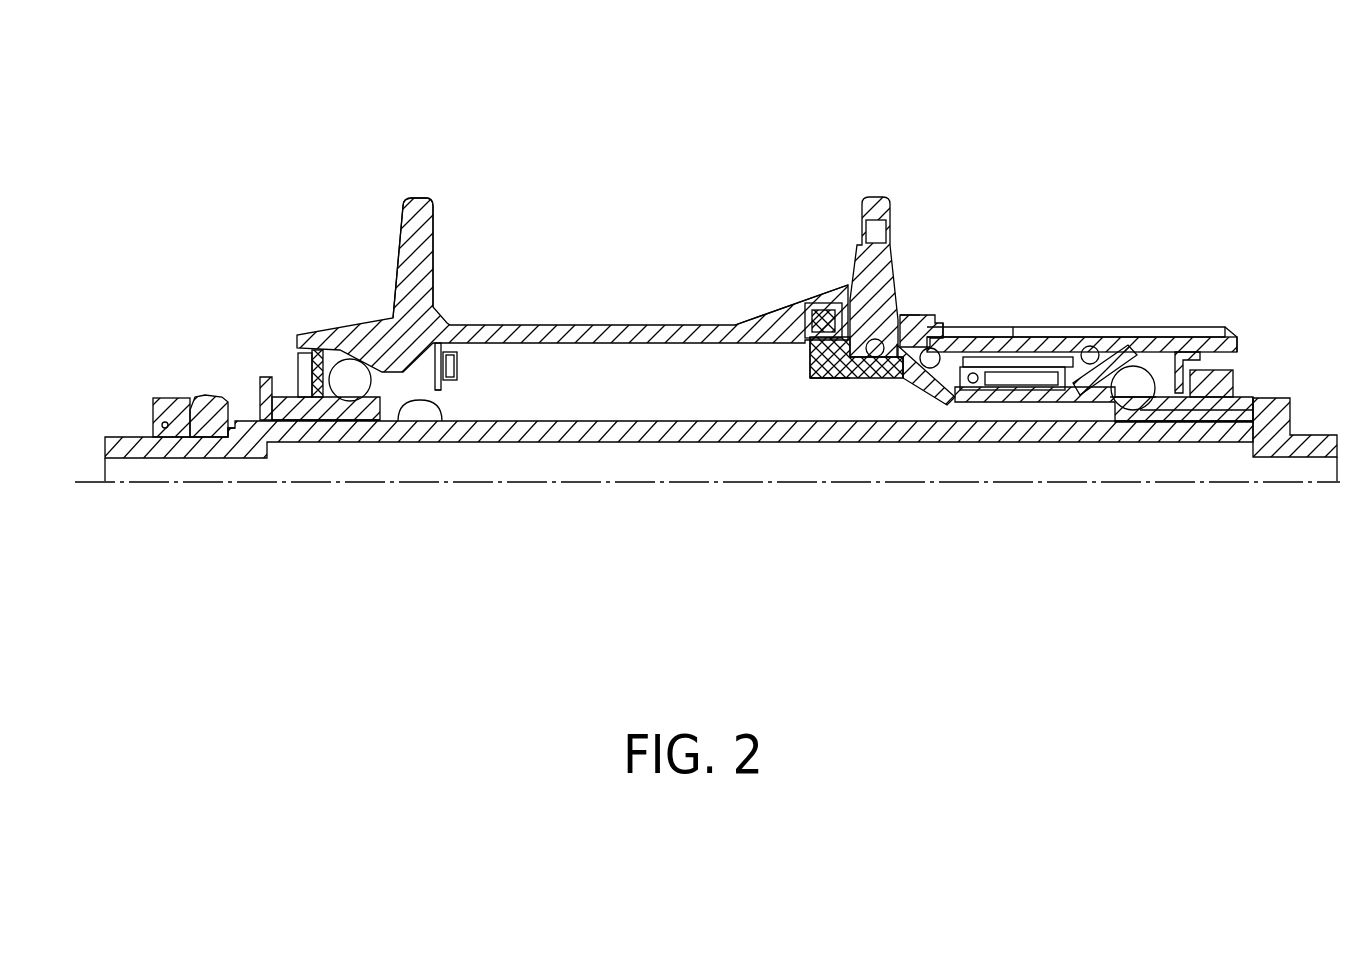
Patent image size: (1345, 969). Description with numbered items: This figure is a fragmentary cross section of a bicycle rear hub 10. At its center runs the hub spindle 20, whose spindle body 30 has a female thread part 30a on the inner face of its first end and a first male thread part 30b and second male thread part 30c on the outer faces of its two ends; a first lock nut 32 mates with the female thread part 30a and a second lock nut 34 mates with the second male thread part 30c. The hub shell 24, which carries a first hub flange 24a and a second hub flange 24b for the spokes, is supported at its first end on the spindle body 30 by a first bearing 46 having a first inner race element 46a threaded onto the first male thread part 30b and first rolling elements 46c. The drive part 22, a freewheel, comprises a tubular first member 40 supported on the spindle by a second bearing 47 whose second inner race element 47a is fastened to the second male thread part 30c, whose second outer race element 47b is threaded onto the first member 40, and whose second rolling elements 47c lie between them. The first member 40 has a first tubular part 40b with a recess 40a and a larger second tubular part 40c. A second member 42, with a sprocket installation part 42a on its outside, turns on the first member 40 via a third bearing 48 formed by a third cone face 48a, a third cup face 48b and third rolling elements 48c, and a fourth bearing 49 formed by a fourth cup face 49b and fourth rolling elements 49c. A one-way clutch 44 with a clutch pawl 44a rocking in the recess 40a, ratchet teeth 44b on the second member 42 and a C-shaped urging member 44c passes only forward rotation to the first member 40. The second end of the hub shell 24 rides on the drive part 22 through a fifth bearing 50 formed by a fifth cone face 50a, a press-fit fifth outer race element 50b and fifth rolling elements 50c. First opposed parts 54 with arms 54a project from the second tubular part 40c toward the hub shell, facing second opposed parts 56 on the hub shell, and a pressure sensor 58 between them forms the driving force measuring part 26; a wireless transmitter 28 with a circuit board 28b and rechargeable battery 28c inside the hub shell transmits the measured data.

The bicycle rear hub 10 is at (631, 184).
The hub spindle 20 is at (603, 397).
The drive part 22 is at (1023, 315).
The hub shell 24 is at (620, 320).
The first hub flange 24a is at (417, 196).
The second hub flange 24b is at (873, 197).
The driving force measuring part 26 is at (787, 265).
The wireless transmitter 28 is at (467, 383).
The circuit board 28b is at (463, 390).
The rechargeable battery 28c is at (458, 352).
The spindle body 30 is at (688, 414).
The female thread part 30a is at (235, 458).
The first male thread part 30b is at (435, 413).
The second male thread part 30c is at (1133, 430).
The first lock nut 32 is at (178, 397).
The second lock nut 34 is at (1256, 397).
The first member 40 is at (985, 355).
The recess 40a is at (1098, 328).
The first tubular part 40b is at (1020, 360).
The second tubular part 40c is at (865, 380).
The second member 42 is at (1103, 338).
The sprocket installation part 42a is at (1240, 348).
The one-way clutch 44 is at (993, 340).
The clutch pawl 44a is at (1005, 340).
The ratchet teeth 44b is at (1010, 368).
The urging member 44c is at (972, 385).
The first bearing 46 is at (345, 340).
The first inner race element 46a is at (345, 400).
The first rolling elements 46c is at (372, 325).
The second bearing 47 is at (1150, 400).
The second inner race element 47a is at (1197, 430).
The second outer race element 47b is at (1077, 390).
The second rolling elements 47c is at (1100, 430).
The third bearing 48 is at (923, 316).
The third cone face 48a is at (931, 370).
The third cup face 48b is at (952, 335).
The third rolling elements 48c is at (913, 318).
The fourth bearing 49 is at (1142, 362).
The fourth cup face 49b is at (1097, 348).
The fourth rolling elements 49c is at (1190, 348).
The fifth bearing 50 is at (801, 436).
The fifth cone face 50a is at (830, 380).
The fifth outer race element 50b is at (803, 380).
The fifth rolling elements 50c is at (817, 380).
The first opposed parts 54 is at (805, 328).
The arms 54a is at (775, 313).
The second opposed parts 56 is at (847, 305).
The pressure sensor 58 is at (820, 300).